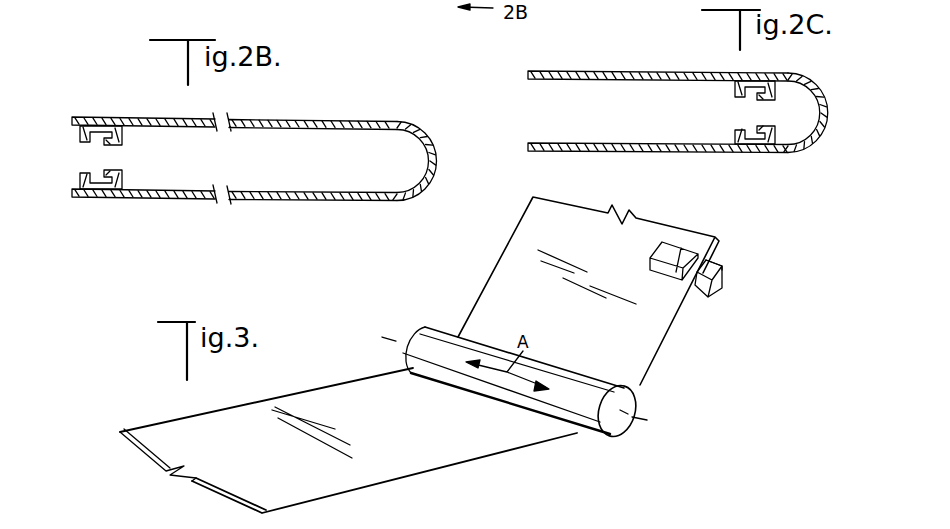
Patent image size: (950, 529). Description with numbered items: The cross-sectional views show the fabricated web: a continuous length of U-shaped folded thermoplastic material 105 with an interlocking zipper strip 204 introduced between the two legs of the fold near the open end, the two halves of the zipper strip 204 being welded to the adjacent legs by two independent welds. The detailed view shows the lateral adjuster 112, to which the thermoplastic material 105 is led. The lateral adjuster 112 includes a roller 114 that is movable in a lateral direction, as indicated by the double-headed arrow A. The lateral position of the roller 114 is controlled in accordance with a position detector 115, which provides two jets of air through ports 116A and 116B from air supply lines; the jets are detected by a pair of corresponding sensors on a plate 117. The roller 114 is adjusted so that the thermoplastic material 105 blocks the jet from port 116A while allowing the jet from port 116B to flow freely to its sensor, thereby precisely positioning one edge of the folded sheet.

In FIG. 2B, the thermoplastic material 105 is at (369, 121).
In FIG. 2C, the thermoplastic material 105 is at (670, 72).
In FIG. 3, the thermoplastic material 105 is at (339, 392).
In FIG. 2B, the zipper strip 204 is at (83, 173).
In FIG. 2C, the zipper strip 204 is at (736, 133).
In FIG. 3, the lateral adjuster 112 is at (458, 299).
In FIG. 3, the roller 114 is at (585, 412).
In FIG. 3, the position detector 115 is at (720, 250).
In FIG. 3, the port 116A is at (664, 246).
In FIG. 3, the port 116B is at (706, 242).
In FIG. 3, the plate 117 is at (723, 268).